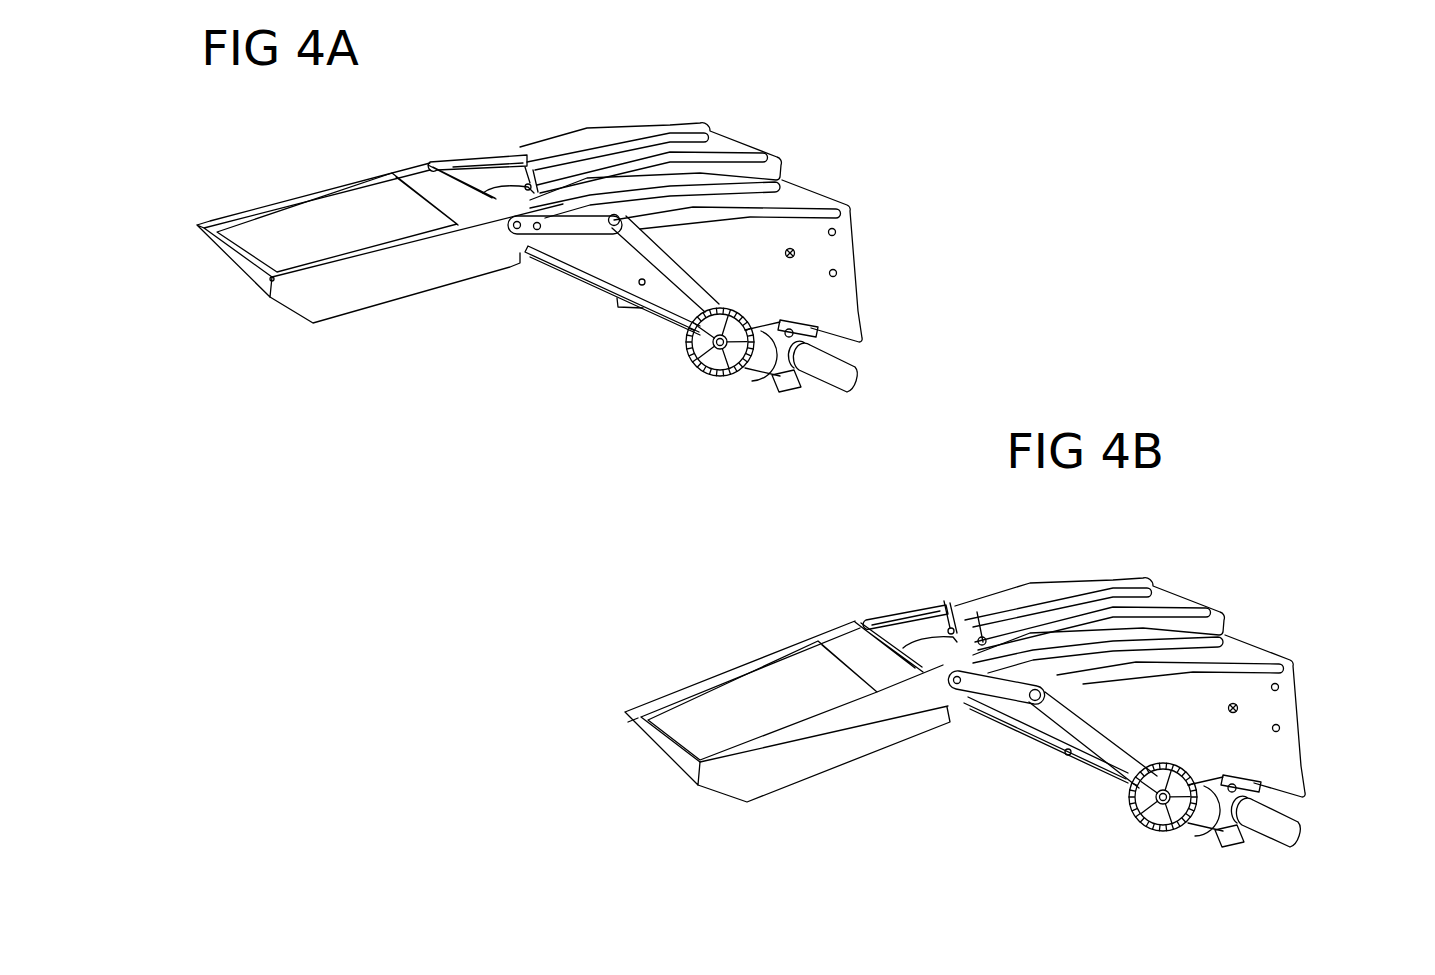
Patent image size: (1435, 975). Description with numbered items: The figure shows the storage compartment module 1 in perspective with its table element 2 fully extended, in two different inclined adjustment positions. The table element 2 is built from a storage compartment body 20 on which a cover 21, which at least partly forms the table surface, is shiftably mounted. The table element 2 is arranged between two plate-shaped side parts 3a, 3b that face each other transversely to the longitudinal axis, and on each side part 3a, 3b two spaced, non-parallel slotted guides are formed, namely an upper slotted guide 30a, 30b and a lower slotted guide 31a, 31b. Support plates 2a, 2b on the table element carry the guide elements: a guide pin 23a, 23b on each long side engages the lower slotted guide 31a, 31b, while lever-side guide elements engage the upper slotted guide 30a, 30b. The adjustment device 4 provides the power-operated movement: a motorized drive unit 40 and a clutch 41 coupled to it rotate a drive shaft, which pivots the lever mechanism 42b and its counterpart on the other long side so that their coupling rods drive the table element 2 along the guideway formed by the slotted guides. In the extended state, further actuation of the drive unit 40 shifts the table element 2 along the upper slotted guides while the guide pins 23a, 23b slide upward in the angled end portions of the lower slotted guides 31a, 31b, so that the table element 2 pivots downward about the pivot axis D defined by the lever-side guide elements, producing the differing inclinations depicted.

In FIG. 4A, the storage compartment module 1 is at (532, 98).
In FIG. 4A, the table element 2 is at (197, 237).
In FIG. 4B, the table element 2 is at (650, 752).
In FIG. 4A, the support plate 2a is at (462, 160).
In FIG. 4B, the support plate 2a is at (885, 618).
In FIG. 4B, the support plate 2b is at (980, 643).
In FIG. 4A, the side part 3a is at (638, 122).
In FIG. 4B, the side part 3a is at (1180, 583).
In FIG. 4A, the side part 3b is at (852, 272).
In FIG. 4B, the side part 3b is at (1287, 740).
In FIG. 4A, the adjustment device 4 is at (752, 386).
In FIG. 4B, the adjustment device 4 is at (1113, 786).
In FIG. 4A, the storage compartment body 20 is at (322, 302).
In FIG. 4B, the storage compartment body 20 is at (772, 777).
In FIG. 4A, the cover 21 is at (290, 218).
In FIG. 4B, the cover 21 is at (705, 700).
In FIG. 4A, the guide pin 23a is at (500, 150).
In FIG. 4B, the guide pin 23a is at (953, 630).
In FIG. 4A, the guide pin 23b is at (590, 233).
In FIG. 4A, the upper slotted guide 30a is at (705, 130).
In FIG. 4B, the upper slotted guide 30a is at (1103, 586).
In FIG. 4A, the upper slotted guide 30b is at (783, 185).
In FIG. 4B, the upper slotted guide 30b is at (1222, 638).
In FIG. 4A, the lower slotted guide 31a is at (770, 155).
In FIG. 4B, the lower slotted guide 31a is at (1215, 605).
In FIG. 4A, the lower slotted guide 31b is at (842, 210).
In FIG. 4B, the lower slotted guide 31b is at (1292, 662).
In FIG. 4A, the motorized drive unit 40 is at (840, 366).
In FIG. 4B, the motorized drive unit 40 is at (1250, 832).
In FIG. 4A, the clutch 41 is at (718, 343).
In FIG. 4B, the clutch 41 is at (1162, 817).
In FIG. 4A, the lever mechanism 42b is at (613, 256).
In FIG. 4B, the lever mechanism 42b is at (1042, 742).
In FIG. 4A, the pivot axis D is at (625, 252).
In FIG. 4B, the pivot axis D is at (1047, 703).